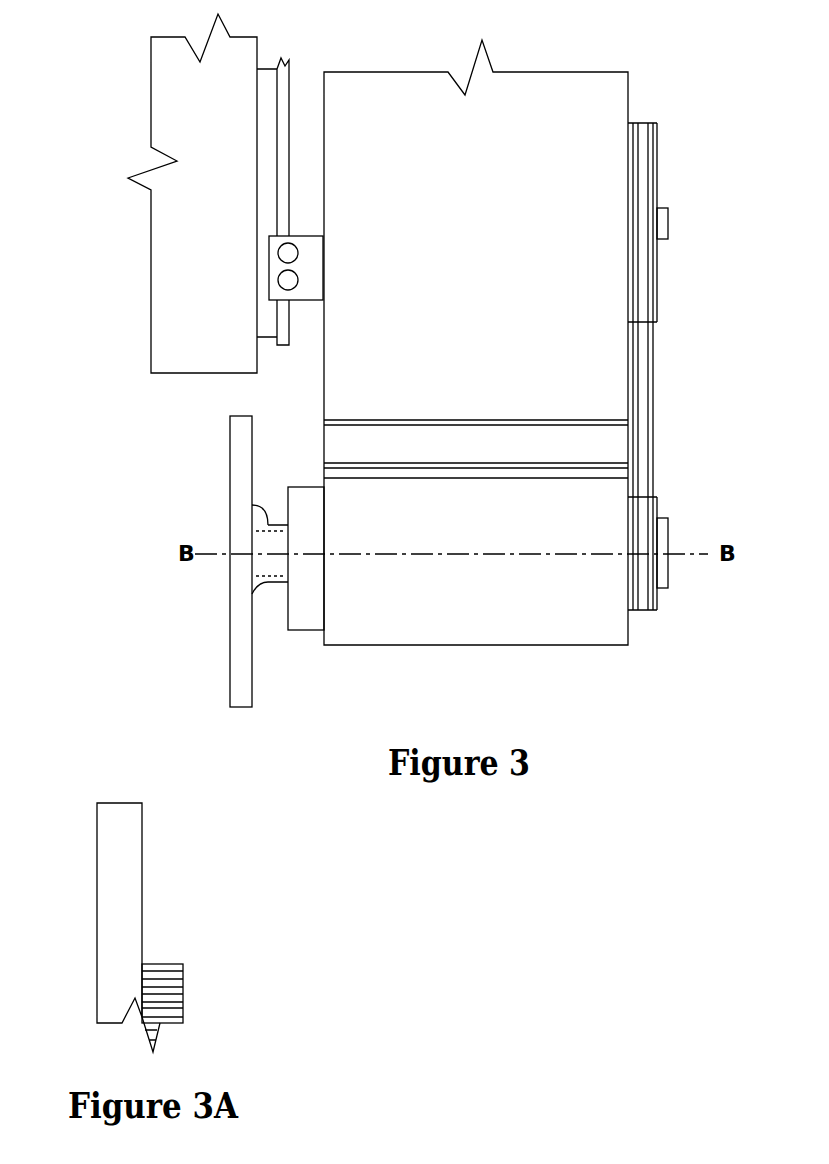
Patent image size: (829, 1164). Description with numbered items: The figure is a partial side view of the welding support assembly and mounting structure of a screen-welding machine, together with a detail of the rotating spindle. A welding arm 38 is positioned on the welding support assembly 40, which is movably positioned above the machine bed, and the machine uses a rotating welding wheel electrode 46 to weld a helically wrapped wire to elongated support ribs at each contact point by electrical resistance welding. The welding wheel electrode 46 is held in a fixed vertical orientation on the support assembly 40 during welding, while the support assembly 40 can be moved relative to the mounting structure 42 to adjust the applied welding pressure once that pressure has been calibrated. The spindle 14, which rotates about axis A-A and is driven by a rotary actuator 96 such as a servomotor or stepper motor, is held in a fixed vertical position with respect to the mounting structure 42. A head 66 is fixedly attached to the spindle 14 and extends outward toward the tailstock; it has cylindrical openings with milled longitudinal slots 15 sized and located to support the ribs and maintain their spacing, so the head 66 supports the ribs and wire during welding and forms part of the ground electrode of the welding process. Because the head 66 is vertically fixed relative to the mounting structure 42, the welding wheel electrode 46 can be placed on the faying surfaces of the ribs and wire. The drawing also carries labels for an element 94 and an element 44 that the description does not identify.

In FIG. 3, the welding arm 38 is at (268, 525).
In FIG. 3, the welding support assembly 40 is at (605, 108).
In FIG. 3, the mounting structure 42 is at (212, 233).
In FIG. 3, the hub 44 is at (588, 632).
In FIG. 3, the welding wheel electrode 46 is at (243, 681).
In FIG. 3, the bracket arm 94 is at (289, 77).
In FIG. 3, the rotary actuator 96 is at (305, 287).
In FIG. 3A, the rotating spindle 14 is at (133, 922).
In FIG. 3A, the milled longitudinal slots 15 is at (175, 975).
In FIG. 3A, the head 66 is at (183, 1008).